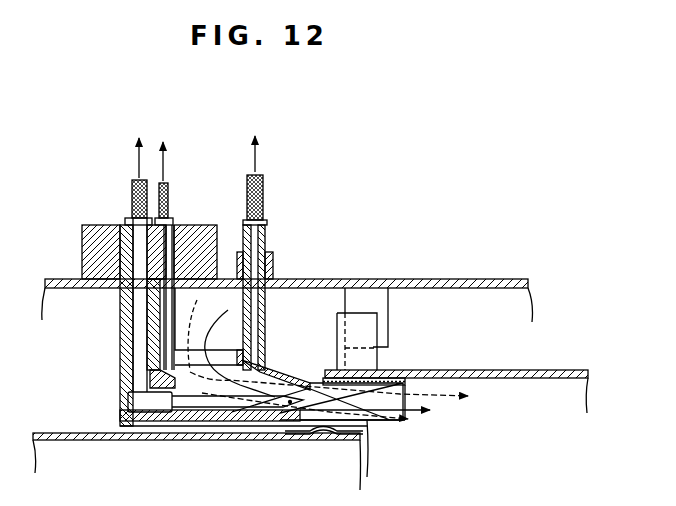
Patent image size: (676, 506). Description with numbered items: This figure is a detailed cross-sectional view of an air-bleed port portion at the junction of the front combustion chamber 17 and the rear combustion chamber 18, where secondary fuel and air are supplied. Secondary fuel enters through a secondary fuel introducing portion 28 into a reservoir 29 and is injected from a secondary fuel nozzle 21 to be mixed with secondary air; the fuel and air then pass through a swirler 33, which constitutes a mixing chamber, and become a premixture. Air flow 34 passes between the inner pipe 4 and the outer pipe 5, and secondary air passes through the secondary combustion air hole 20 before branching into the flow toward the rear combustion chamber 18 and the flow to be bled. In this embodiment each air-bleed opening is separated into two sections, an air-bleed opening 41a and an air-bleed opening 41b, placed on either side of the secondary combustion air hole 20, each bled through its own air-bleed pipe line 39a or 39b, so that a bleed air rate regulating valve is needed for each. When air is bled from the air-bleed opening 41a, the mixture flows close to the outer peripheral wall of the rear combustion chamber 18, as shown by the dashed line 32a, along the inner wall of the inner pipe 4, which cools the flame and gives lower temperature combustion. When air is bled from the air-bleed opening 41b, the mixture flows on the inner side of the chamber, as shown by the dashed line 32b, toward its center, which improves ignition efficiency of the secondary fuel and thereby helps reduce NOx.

The secondary fuel introducing portion 28 is at (137, 197).
The air-bleed pipe line 39b is at (168, 199).
The air-bleed pipe line 39a is at (262, 188).
The outer pipe 5 is at (450, 280).
The inner pipe 4 is at (550, 372).
The front combustion chamber 17 is at (145, 492).
The air flow 34 is at (412, 322).
The secondary combustion air hole 20 is at (187, 348).
The air-bleed opening 41b is at (155, 378).
The air-bleed opening 41a is at (268, 367).
The reservoir 29 is at (133, 403).
The secondary fuel nozzle 21 is at (265, 400).
The swirler 33 is at (333, 417).
The dashed line 32a is at (358, 392).
The dashed line 32b is at (325, 424).
The rear combustion chamber 18 is at (518, 448).